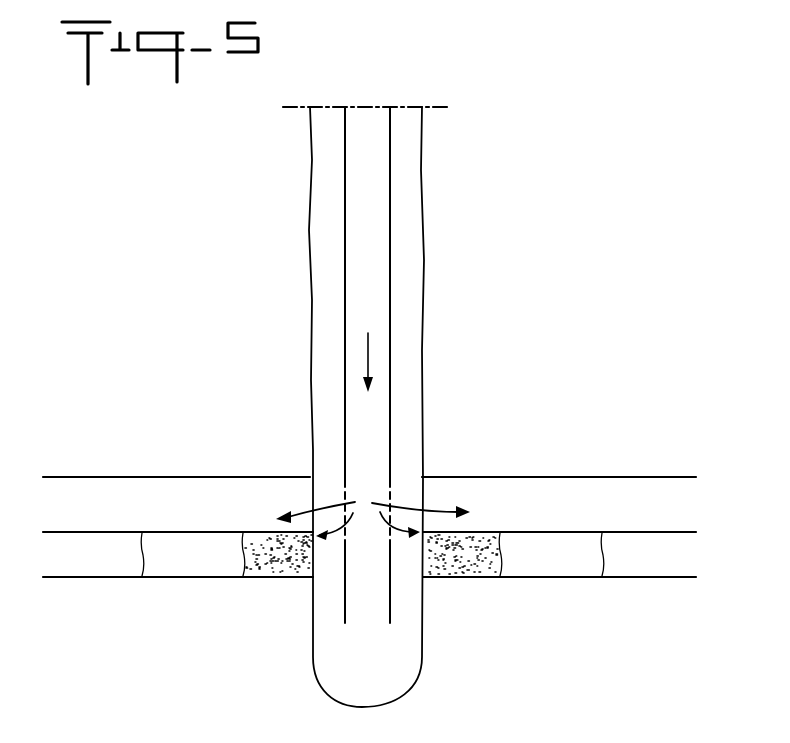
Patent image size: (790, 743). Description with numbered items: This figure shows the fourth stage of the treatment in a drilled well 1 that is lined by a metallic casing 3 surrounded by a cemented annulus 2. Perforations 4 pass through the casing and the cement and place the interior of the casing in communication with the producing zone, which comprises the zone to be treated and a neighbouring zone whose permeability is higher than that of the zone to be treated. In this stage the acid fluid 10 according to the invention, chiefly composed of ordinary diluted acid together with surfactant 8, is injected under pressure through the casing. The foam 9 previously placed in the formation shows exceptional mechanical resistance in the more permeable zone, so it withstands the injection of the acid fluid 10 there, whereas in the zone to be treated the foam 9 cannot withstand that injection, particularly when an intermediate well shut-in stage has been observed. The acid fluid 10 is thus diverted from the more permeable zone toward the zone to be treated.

The drilled well 1 is at (298, 263).
The cemented annulus 2 is at (403, 190).
The metallic casing 3 is at (390, 273).
The perforations through the casing and the cement 4 is at (343, 486).
The surfactant 8 is at (568, 563).
The foam 9 is at (472, 570).
The acid fluid 10 is at (389, 409).